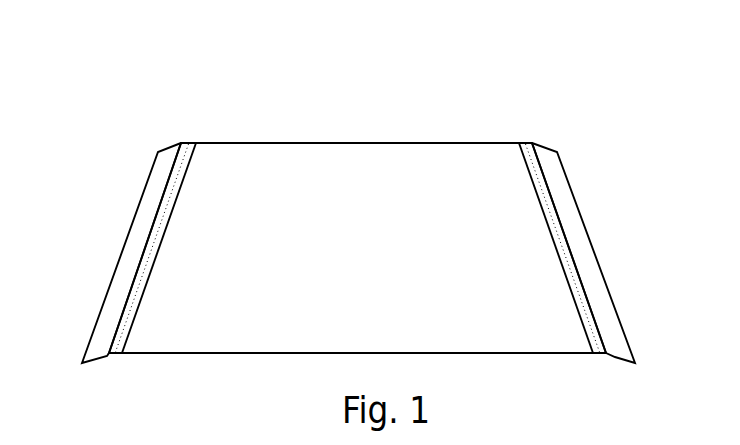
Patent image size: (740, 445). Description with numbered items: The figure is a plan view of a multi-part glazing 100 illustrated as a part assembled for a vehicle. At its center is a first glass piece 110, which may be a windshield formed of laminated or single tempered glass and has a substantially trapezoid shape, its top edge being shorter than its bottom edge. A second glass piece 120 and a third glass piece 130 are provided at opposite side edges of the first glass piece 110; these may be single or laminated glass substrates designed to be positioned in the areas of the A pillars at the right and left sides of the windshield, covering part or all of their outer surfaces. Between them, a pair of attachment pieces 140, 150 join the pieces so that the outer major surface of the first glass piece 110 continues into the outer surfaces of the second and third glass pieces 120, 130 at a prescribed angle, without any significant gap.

The multi-part glazing 100 is at (360, 192).
The first glass piece 110 is at (357, 178).
The second glass piece 120 is at (567, 209).
The third glass piece 130 is at (152, 208).
The attachment piece 140 is at (572, 272).
The attachment piece 150 is at (138, 270).